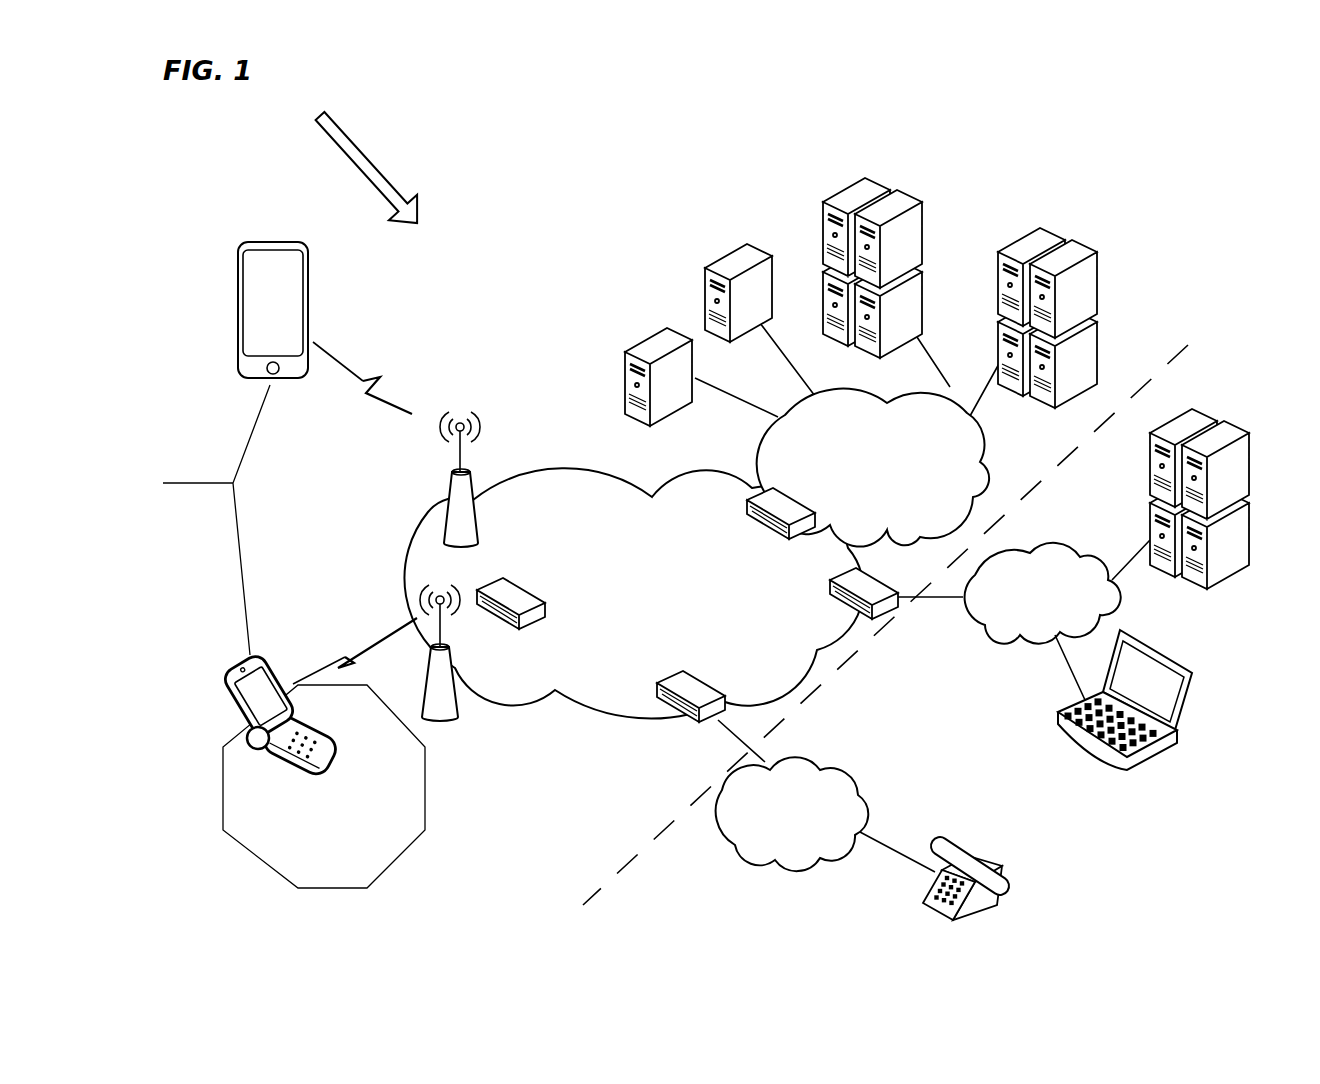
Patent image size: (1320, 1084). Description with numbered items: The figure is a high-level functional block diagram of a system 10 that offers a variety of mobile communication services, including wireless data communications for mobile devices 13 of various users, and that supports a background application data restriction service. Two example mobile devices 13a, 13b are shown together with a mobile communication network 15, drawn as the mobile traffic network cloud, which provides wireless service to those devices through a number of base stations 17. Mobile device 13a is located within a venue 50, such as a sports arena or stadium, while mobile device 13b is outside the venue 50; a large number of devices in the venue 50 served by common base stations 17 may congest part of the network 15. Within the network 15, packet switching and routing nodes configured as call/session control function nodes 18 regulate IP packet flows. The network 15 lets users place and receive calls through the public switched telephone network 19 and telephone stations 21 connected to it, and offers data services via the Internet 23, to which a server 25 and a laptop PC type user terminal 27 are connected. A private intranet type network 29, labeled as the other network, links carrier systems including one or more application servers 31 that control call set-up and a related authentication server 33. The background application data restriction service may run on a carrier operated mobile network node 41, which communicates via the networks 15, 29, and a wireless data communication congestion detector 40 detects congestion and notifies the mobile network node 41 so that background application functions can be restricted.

The system 10 is at (355, 157).
The mobile devices 13 is at (202, 520).
The mobile device 13a is at (222, 690).
The mobile device 13b is at (238, 290).
The mobile communication network 15 is at (528, 478).
The base stations 17 is at (447, 492).
The call/session control function nodes 18 is at (522, 590).
The public switched telephone network 19 is at (864, 796).
The telephone stations 21 is at (925, 904).
The Internet 23 is at (984, 636).
The server 25 is at (1150, 508).
The laptop PC type user terminal 27 is at (1100, 746).
The network 29 is at (1000, 450).
The application servers 31 is at (925, 220).
The authentication server 33 is at (1100, 316).
The wireless data communication congestion detector 40 is at (666, 326).
The mobile network node 41 is at (746, 243).
The venue 50 is at (425, 800).